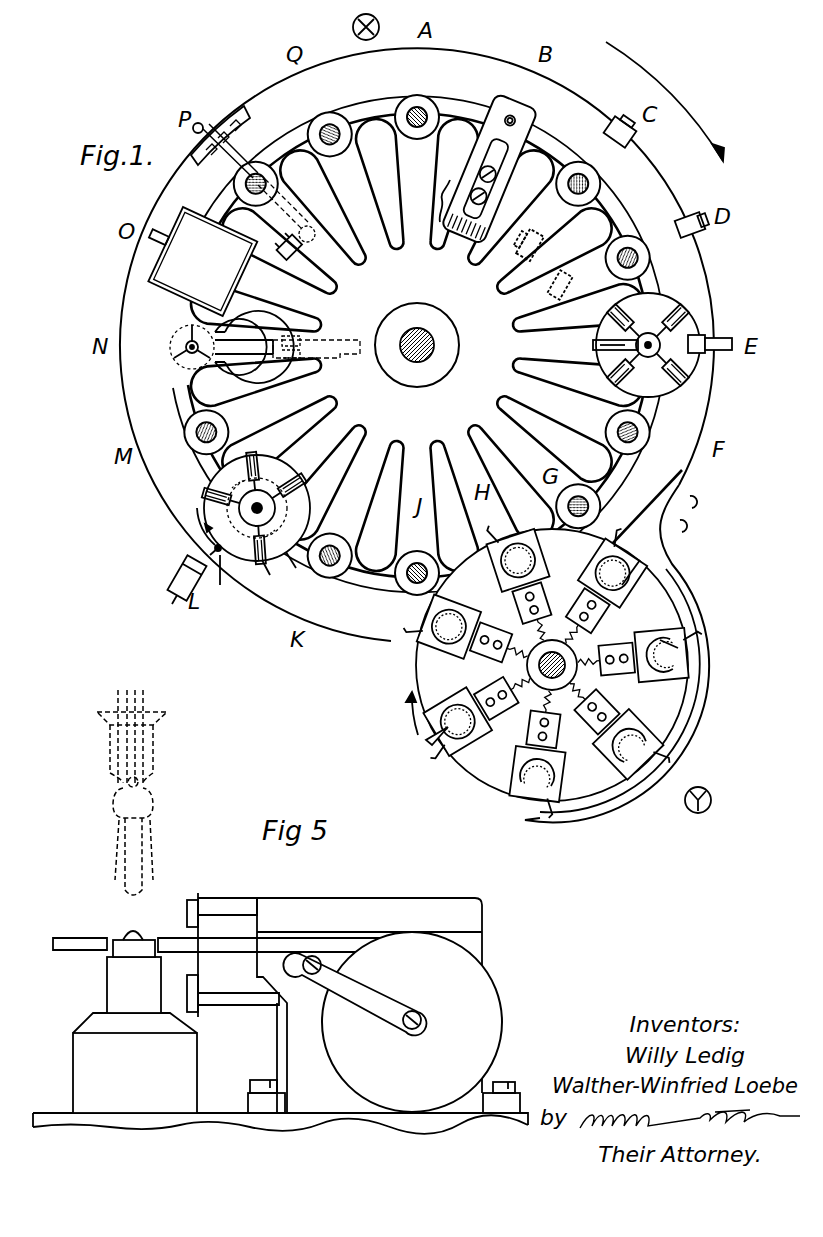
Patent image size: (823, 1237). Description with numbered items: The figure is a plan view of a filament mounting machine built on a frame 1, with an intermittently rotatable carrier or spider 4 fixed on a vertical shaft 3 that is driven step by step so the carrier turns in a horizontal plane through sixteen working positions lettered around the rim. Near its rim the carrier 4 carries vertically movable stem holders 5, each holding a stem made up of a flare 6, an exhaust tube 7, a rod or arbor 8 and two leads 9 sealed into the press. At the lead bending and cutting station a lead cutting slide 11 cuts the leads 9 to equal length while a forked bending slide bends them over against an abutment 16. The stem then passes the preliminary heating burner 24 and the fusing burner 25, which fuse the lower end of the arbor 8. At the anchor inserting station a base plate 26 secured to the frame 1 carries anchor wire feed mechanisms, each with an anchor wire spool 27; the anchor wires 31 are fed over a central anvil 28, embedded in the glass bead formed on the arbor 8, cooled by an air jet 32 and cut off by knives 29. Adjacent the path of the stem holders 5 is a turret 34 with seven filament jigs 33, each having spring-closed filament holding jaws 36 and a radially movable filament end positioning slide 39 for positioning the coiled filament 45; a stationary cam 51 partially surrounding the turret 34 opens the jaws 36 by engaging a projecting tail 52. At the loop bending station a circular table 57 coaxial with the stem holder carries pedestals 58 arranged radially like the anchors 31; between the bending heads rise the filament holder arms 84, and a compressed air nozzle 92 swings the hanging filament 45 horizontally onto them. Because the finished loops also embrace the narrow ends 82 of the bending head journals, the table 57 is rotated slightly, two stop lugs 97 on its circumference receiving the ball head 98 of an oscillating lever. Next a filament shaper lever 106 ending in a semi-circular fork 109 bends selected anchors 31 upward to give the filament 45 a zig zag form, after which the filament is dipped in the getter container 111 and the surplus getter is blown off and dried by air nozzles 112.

In FIG. 1, the frame 1 is at (708, 400).
In FIG. 1, the vertical shaft 3 is at (435, 344).
In FIG. 1, the carrier or spider 4 is at (628, 460).
In FIG. 1, the stem holders 5 is at (348, 140).
In FIG. 5, the flare 6 is at (150, 745).
In FIG. 5, the exhaust tube 7 is at (133, 690).
In FIG. 5, the rod or arbor 8 is at (125, 890).
In FIG. 5, the leads 9 is at (116, 845).
In FIG. 1, the lead cutting slide 11 is at (441, 199).
In FIG. 1, the abutment 16 is at (512, 118).
In FIG. 1, the preliminary heating burner 24 is at (624, 144).
In FIG. 1, the fusing burner 25 is at (668, 223).
In FIG. 1, the base plate 26 is at (694, 330).
In FIG. 5, the base plate 26 is at (46, 1113).
In FIG. 5, the anchor wire spool 27 is at (486, 985).
In FIG. 5, the central anvil 28 is at (110, 955).
In FIG. 5, the knives 29 is at (204, 972).
In FIG. 1, the anchor wires 31 is at (660, 350).
In FIG. 5, the anchor wires 31 is at (134, 926).
In FIG. 1, the air jet 32 is at (724, 350).
In FIG. 1, the filament jigs 33 is at (636, 582).
In FIG. 1, the turret 34 is at (551, 666).
In FIG. 1, the filament holding jaws 36 is at (652, 636).
In FIG. 1, the filament end positioning slides 39 is at (600, 648).
In FIG. 1, the coiled filament 45 is at (300, 500).
In FIG. 1, the stationary cam 51 is at (688, 596).
In FIG. 1, the projecting tail 52 is at (428, 748).
In FIG. 1, the circular table 57 is at (284, 567).
In FIG. 1, the pedestals 58 is at (255, 571).
In FIG. 1, the narrow ends of journals 82 is at (228, 508).
In FIG. 1, the filament holder arms 84 is at (268, 478).
In FIG. 1, the compressed air nozzle 92 is at (176, 580).
In FIG. 1, the stop lugs 97 is at (210, 548).
In FIG. 1, the ball head 98 is at (215, 548).
In FIG. 1, the lever 106 is at (232, 342).
In FIG. 1, the semi-circular fork 109 is at (228, 360).
In FIG. 1, the getter container 111 is at (170, 258).
In FIG. 1, the air nozzles 112 is at (228, 124).